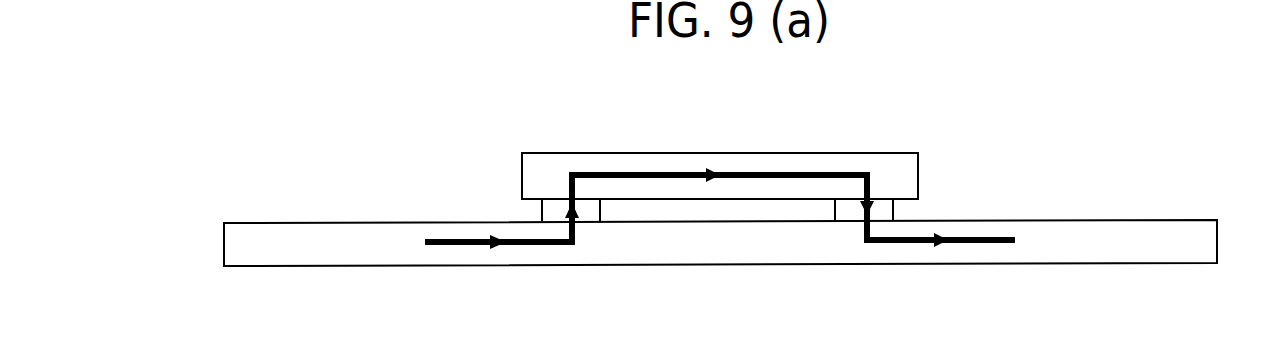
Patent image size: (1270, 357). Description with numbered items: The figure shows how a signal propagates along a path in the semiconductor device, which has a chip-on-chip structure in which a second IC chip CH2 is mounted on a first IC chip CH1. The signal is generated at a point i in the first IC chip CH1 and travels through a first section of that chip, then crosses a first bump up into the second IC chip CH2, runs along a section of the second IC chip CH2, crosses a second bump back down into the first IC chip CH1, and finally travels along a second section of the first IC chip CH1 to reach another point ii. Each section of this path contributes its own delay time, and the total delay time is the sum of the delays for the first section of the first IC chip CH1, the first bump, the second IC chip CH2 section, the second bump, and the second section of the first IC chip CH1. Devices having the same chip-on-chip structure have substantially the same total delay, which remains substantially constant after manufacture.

The first IC chip CH1 is at (270, 223).
The second IC chip CH2 is at (553, 153).
The point i is at (421, 240).
The point ii is at (1023, 242).